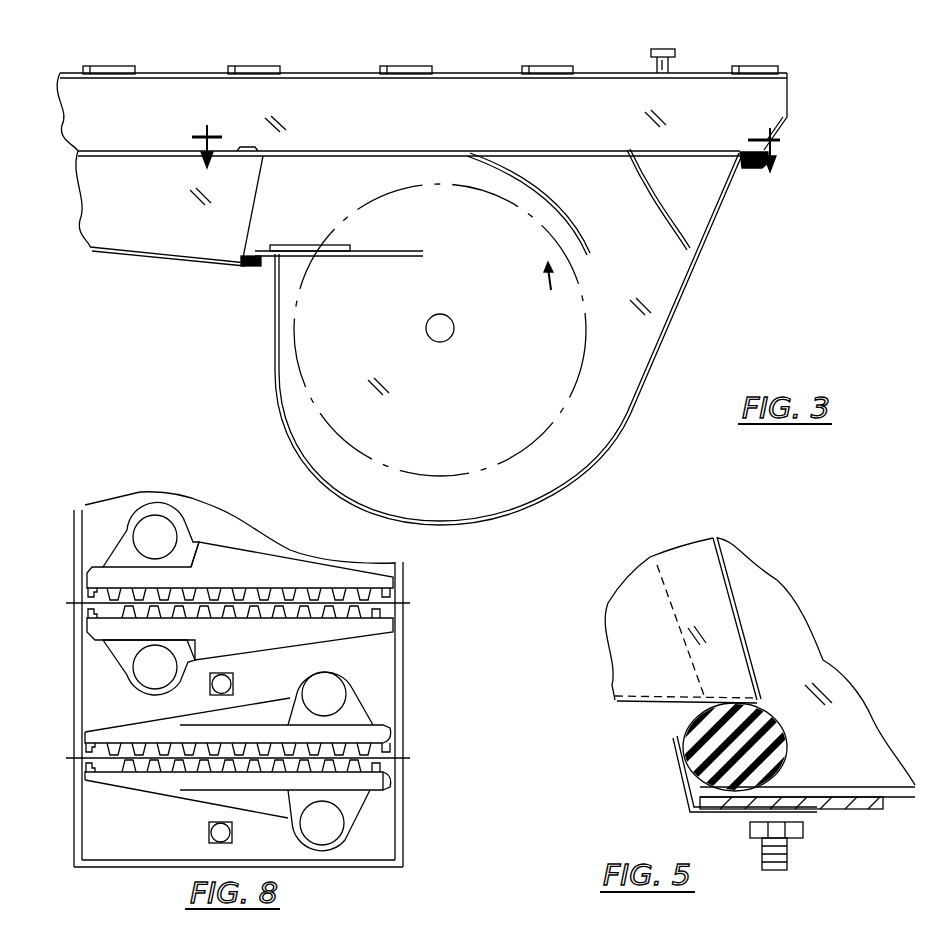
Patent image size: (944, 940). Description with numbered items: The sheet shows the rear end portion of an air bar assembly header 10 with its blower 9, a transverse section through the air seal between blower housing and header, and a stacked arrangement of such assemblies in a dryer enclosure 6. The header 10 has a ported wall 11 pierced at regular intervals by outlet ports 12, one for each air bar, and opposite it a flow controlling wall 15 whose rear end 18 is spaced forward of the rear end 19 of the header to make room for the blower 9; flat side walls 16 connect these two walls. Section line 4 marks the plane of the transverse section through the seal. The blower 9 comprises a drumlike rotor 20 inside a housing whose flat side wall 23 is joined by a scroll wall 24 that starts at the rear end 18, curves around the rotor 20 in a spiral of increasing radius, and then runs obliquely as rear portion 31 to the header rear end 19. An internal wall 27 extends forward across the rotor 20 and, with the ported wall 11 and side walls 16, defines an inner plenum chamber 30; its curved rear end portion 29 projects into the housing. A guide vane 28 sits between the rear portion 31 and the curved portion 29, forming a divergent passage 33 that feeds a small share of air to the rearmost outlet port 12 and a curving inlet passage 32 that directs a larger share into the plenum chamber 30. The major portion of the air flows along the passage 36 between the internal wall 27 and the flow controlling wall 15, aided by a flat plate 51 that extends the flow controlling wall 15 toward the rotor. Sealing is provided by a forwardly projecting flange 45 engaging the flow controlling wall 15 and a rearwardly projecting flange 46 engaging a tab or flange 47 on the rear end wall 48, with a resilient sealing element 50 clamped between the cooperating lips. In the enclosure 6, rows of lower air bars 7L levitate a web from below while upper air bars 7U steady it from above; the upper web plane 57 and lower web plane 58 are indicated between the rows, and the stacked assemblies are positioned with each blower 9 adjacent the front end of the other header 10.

In FIG. 3, the header 10 is at (160, 58).
In FIG. 3, the inner plenum chamber 30 is at (183, 90).
In FIG. 3, the outlet ports 12 is at (265, 70).
In FIG. 3, the ported wall 11 is at (338, 76).
In FIG. 3, the side walls 16 is at (600, 95).
In FIG. 3, the rear end of the header 19 is at (789, 103).
In FIG. 3, the rear end wall 48 is at (781, 134).
In FIG. 3, the internal wall 27 is at (130, 152).
In FIG. 3, the curving inlet passage 32 is at (565, 158).
In FIG. 3, the section line 4- 4 is at (484, 154).
In FIG. 3, the rearwardly projecting flange 46 is at (740, 155).
In FIG. 3, the tab or flange 47 is at (745, 168).
In FIG. 3, the flow controlling wall 15 is at (148, 258).
In FIG. 5, the flow controlling wall 15 is at (650, 705).
In FIG. 3, the passage 36 is at (185, 210).
In FIG. 3, the rear end of the flow controlling wall 18 is at (252, 268).
In FIG. 3, the forwardly projecting flange 45 is at (257, 255).
In FIG. 5, the forwardly projecting flange 45 is at (822, 792).
In FIG. 3, the flat plate 51 is at (310, 250).
In FIG. 3, the rotor 20 is at (275, 381).
In FIG. 3, the scroll wall 24 is at (585, 465).
In FIG. 3, the rear portion of the scroll wall 31 is at (640, 385).
In FIG. 3, the divergent passage 33 is at (705, 210).
In FIG. 3, the housing side wall 23 is at (660, 310).
In FIG. 3, the blower 9 is at (685, 347).
In FIG. 8, the blower 9 is at (130, 505).
In FIG. 3, the rear end portion of the internal wall 29 is at (570, 213).
In FIG. 3, the guide vane 28 is at (665, 185).
In FIG. 8, the dryer enclosure 6 is at (405, 634).
In FIG. 8, the upper air bars 7U is at (240, 598).
In FIG. 8, the lower air bars 7L is at (250, 614).
In FIG. 8, the upper guide line 57 is at (408, 604).
In FIG. 8, the lower guide line 58 is at (408, 760).
In FIG. 5, the resilient sealing element 50 is at (690, 758).